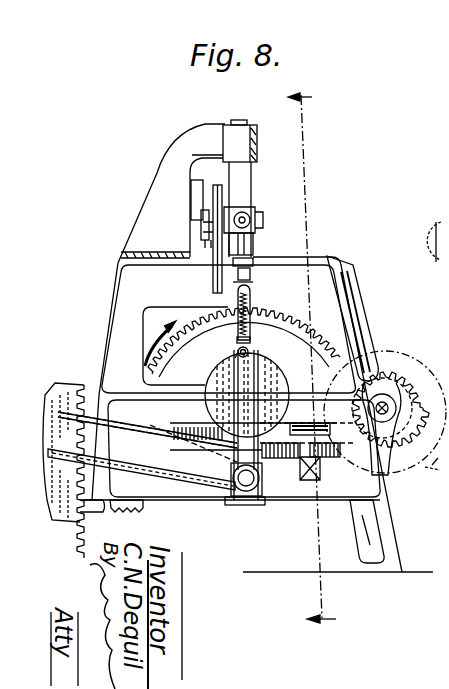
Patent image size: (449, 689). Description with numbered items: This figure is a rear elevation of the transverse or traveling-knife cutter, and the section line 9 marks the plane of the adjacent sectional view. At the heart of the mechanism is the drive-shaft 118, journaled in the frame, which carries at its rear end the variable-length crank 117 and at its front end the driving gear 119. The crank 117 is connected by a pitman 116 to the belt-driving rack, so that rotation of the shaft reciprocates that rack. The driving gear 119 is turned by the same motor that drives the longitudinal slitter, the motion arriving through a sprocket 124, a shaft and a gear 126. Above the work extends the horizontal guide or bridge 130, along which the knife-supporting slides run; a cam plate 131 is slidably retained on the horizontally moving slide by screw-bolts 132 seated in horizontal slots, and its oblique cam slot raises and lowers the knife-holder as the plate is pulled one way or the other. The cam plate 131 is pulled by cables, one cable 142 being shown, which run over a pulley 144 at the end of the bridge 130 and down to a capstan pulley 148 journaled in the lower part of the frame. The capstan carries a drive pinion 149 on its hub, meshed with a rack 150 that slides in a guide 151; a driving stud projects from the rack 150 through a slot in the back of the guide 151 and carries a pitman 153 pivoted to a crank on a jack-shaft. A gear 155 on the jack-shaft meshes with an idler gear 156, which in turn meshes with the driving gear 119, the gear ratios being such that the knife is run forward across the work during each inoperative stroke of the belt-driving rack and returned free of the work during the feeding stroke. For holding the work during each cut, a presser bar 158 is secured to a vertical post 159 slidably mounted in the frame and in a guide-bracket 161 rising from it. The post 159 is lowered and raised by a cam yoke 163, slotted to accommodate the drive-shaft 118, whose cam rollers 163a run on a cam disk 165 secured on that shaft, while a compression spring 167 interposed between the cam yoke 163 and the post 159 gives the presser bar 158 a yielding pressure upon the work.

The guide-bracket 161 is at (252, 132).
The vertical post 159 is at (247, 187).
The horizontal guide or bridge 130 is at (196, 190).
The cable 142 is at (207, 227).
The pulley 144 is at (214, 267).
The cam plate 131 is at (226, 196).
The screw-bolts 132 is at (250, 208).
The presser bar 158 is at (255, 243).
The compression spring 167 is at (250, 305).
The cam yoke 163 is at (258, 355).
The cam rollers 163a is at (235, 358).
The cam disk 165 is at (263, 370).
The drive-shaft 118 is at (210, 380).
The driving gear 119 is at (162, 338).
The pitman 153 is at (77, 410).
The pitman 116 is at (108, 447).
The guide 151 is at (182, 450).
The variable-length crank 117 is at (262, 498).
The drive pinion 149 is at (310, 463).
The rack 150 is at (320, 465).
The capstan pulley 148 is at (300, 420).
The gear 126 is at (392, 375).
The sprocket 124 is at (427, 378).
The idler gear 156 is at (150, 510).
The gear 155 is at (68, 514).
The section line 9 is at (318, 358).